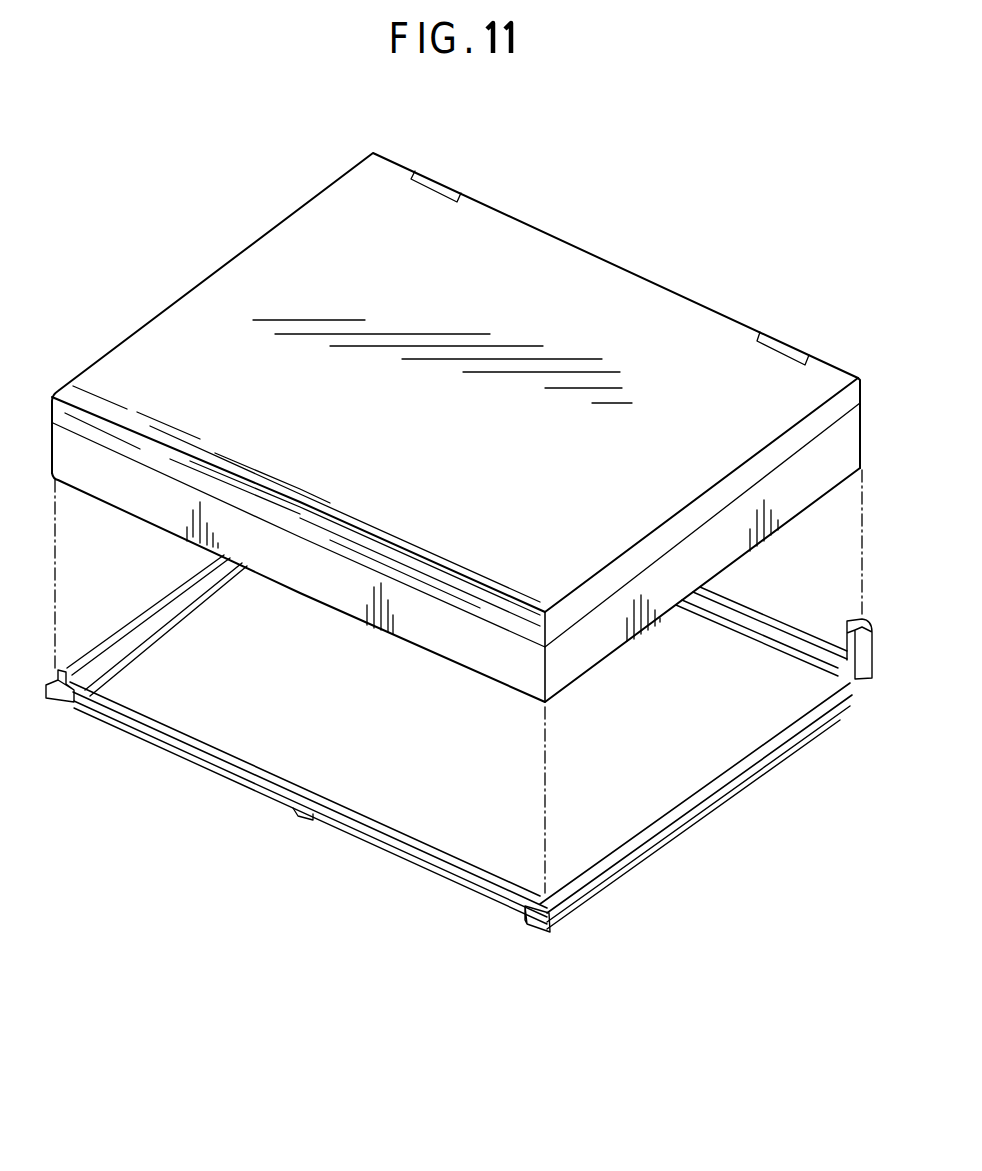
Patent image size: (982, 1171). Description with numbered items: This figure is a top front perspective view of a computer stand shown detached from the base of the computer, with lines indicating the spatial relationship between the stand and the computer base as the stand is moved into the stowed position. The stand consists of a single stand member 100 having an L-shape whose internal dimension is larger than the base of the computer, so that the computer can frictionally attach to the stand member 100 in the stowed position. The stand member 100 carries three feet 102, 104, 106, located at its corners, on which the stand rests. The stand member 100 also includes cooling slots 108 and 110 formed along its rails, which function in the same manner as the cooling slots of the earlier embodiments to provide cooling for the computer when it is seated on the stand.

The stand member 100 is at (459, 747).
The foot 102 is at (60, 700).
The foot 104 is at (538, 920).
The foot 106 is at (867, 673).
The cooling slot 108 is at (220, 765).
The cooling slot 110 is at (413, 853).